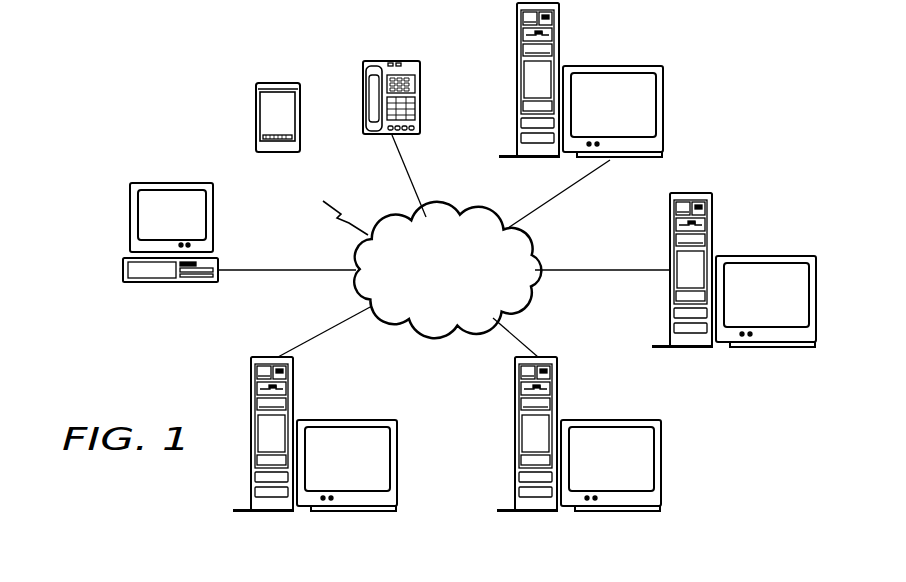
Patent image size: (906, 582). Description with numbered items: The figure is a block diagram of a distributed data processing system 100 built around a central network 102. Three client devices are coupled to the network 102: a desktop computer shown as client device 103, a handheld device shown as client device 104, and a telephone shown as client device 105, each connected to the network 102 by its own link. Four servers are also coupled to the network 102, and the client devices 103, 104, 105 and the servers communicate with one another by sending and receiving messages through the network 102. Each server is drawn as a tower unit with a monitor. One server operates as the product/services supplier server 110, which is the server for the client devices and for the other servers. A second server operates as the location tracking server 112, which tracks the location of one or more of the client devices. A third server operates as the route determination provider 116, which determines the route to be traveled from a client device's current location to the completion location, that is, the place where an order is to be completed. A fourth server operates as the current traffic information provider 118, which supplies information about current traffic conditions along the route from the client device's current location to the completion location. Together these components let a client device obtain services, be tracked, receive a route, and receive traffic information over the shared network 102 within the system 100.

The distributed data processing system 100 is at (140, 65).
The network 102 is at (465, 295).
The client device 103 is at (130, 222).
The client device 104 is at (256, 114).
The client device 105 is at (420, 98).
The product/services supplier server 110 is at (763, 257).
The location tracking server 112 is at (346, 420).
The route determination provider 116 is at (664, 108).
The current traffic information provider 118 is at (609, 420).